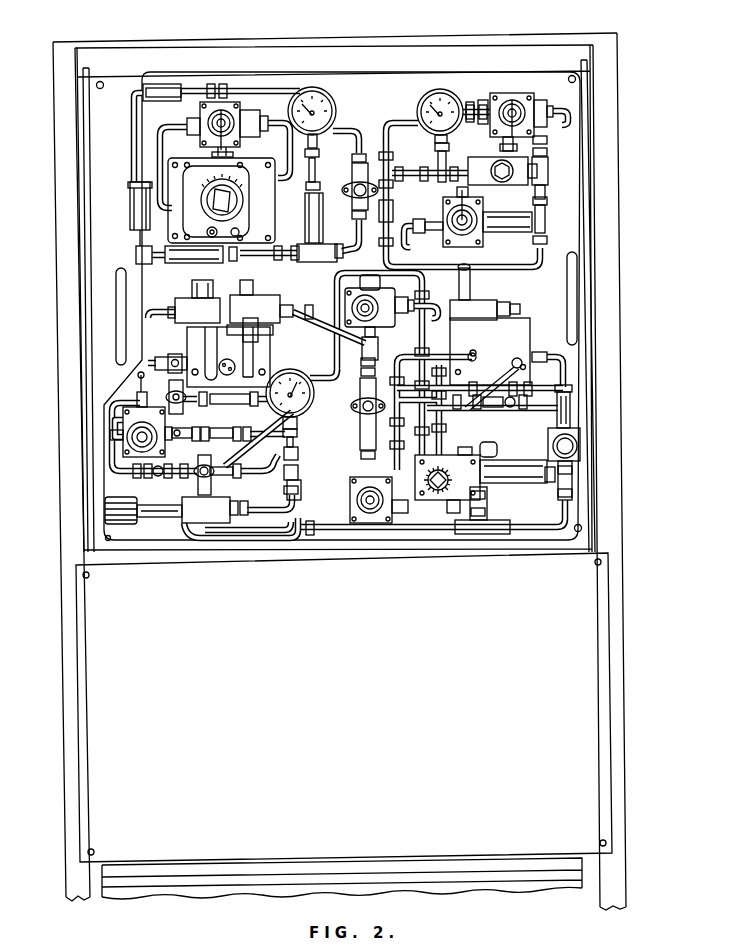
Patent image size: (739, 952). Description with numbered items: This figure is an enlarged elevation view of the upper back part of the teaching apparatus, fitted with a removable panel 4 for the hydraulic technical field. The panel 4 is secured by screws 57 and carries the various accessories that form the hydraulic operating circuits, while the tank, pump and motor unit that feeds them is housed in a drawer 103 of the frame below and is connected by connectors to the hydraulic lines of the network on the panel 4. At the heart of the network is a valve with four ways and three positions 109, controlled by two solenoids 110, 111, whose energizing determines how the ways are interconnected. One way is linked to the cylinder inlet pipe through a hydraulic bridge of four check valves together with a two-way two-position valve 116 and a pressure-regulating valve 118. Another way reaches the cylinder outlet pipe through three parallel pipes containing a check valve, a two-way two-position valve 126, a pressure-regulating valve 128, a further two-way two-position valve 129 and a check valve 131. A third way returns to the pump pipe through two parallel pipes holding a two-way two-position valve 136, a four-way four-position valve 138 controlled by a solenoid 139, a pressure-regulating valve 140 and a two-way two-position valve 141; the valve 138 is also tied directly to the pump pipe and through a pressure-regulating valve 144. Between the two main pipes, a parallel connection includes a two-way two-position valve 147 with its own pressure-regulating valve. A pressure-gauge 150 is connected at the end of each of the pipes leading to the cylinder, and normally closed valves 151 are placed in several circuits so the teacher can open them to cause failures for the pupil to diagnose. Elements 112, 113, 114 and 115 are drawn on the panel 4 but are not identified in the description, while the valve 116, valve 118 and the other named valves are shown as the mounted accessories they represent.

The removable panel 4 is at (570, 136).
The screws 57 is at (100, 81).
The drawer 103 is at (575, 871).
The three-position four-way valve 109 is at (190, 346).
The solenoid 110 is at (190, 305).
The solenoid 111 is at (274, 301).
The filter 112 is at (133, 209).
The cylinder 113 is at (314, 220).
The inlet fitting 114 is at (170, 85).
The cylinder 115 is at (175, 262).
The two-way two-position valve 116 is at (200, 114).
The pressure-regulating valve 118 is at (197, 182).
The two-way two-position valve 126 is at (443, 235).
The pressure-regulating valve 128 is at (542, 189).
The two-way two-position valve 129 is at (510, 95).
The check valve 131 is at (474, 100).
The two-way two-position valve 136 is at (384, 325).
The four-way four-position valve 138 is at (525, 339).
The solenoid 139 is at (500, 301).
The pressure-regulating valve 140 is at (482, 470).
The two-way two-position valve 141 is at (354, 492).
The pressure-regulating valve 144 is at (568, 444).
The two-way two-position valve 147 is at (168, 432).
The pressure-gauge 150 is at (336, 105).
The normally closed valve 151 is at (356, 184).